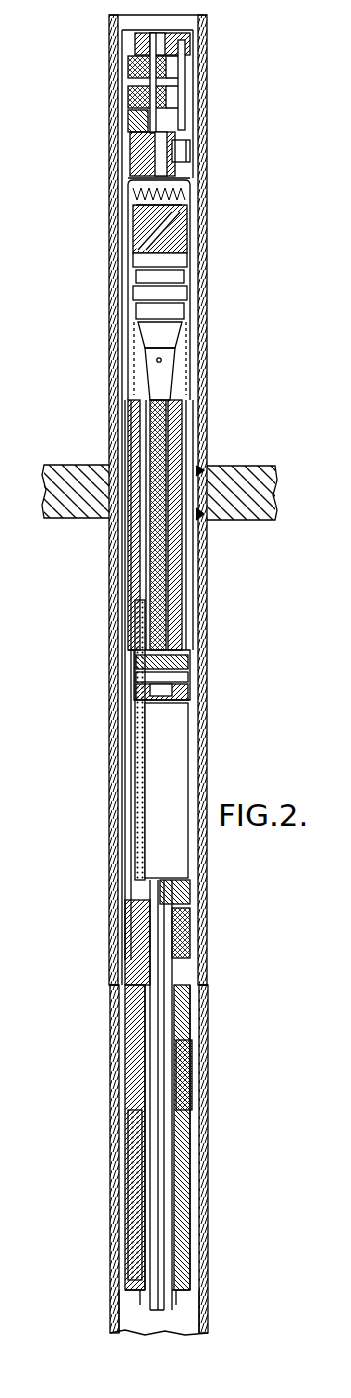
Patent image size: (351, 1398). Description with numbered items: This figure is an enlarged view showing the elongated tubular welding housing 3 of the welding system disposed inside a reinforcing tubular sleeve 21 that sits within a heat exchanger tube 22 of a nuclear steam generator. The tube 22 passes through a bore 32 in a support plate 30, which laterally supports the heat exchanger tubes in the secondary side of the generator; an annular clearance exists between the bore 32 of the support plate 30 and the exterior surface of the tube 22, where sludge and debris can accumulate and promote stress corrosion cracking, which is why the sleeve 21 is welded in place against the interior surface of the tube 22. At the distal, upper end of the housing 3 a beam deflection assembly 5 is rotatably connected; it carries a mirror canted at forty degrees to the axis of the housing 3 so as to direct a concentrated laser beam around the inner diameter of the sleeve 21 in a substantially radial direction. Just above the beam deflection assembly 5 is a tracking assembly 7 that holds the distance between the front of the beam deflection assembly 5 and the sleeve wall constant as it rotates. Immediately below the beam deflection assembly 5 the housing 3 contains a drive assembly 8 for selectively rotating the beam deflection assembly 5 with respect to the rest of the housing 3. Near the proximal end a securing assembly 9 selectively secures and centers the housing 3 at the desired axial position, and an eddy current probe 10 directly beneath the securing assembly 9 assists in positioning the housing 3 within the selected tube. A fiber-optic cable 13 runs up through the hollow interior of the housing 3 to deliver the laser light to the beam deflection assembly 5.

The welding housing 3 is at (146, 453).
The beam deflection assembly 5 is at (203, 242).
The tracking assembly 7 is at (122, 197).
The drive assembly 8 is at (163, 763).
The securing assembly 9 is at (92, 970).
The eddy current probe 10 is at (127, 1228).
The fiber-optic cable 13 is at (138, 744).
The tubular sleeve 21 is at (203, 298).
The heat exchanger tube 22 is at (207, 1082).
The support plate 30 is at (85, 500).
The bore 32 is at (205, 468).